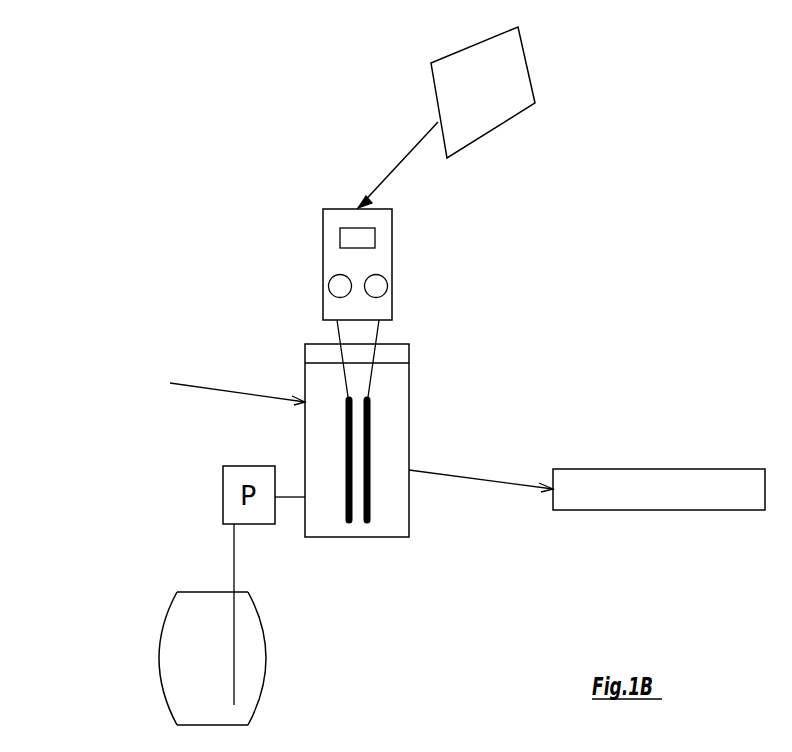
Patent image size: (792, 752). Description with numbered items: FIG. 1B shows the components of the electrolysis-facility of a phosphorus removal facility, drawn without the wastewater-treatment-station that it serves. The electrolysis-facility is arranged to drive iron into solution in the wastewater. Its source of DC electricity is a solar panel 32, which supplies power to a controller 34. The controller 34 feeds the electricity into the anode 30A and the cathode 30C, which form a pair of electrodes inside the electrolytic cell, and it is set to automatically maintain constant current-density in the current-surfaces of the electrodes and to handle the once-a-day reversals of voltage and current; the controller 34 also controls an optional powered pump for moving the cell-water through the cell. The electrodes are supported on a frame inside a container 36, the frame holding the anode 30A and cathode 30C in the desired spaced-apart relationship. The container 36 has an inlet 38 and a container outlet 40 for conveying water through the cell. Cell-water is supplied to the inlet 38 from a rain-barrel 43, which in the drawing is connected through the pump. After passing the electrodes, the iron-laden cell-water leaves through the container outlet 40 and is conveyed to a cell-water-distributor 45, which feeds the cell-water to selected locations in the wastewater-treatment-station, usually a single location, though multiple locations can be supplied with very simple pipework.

The solar panel 32 is at (497, 123).
The controller 34 is at (343, 264).
The container 36 is at (409, 395).
The inlet 38 is at (225, 385).
The anode 30A is at (345, 505).
The cathode 30C is at (370, 492).
The container outlet 40 is at (478, 477).
The cell-water-distributor 45 is at (662, 485).
The rain-barrel 43 is at (173, 685).